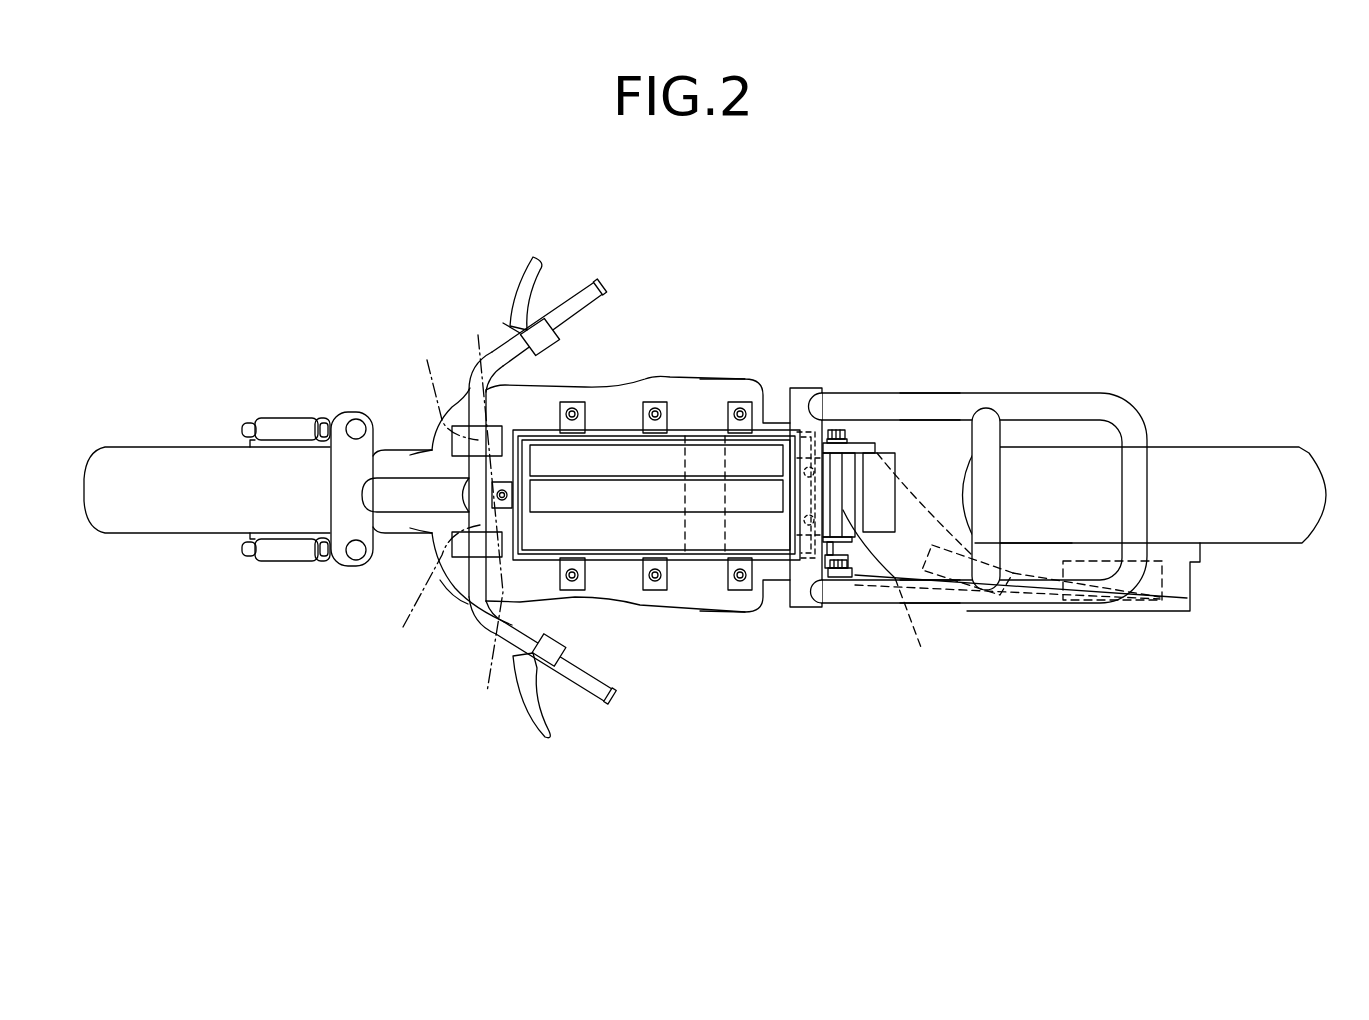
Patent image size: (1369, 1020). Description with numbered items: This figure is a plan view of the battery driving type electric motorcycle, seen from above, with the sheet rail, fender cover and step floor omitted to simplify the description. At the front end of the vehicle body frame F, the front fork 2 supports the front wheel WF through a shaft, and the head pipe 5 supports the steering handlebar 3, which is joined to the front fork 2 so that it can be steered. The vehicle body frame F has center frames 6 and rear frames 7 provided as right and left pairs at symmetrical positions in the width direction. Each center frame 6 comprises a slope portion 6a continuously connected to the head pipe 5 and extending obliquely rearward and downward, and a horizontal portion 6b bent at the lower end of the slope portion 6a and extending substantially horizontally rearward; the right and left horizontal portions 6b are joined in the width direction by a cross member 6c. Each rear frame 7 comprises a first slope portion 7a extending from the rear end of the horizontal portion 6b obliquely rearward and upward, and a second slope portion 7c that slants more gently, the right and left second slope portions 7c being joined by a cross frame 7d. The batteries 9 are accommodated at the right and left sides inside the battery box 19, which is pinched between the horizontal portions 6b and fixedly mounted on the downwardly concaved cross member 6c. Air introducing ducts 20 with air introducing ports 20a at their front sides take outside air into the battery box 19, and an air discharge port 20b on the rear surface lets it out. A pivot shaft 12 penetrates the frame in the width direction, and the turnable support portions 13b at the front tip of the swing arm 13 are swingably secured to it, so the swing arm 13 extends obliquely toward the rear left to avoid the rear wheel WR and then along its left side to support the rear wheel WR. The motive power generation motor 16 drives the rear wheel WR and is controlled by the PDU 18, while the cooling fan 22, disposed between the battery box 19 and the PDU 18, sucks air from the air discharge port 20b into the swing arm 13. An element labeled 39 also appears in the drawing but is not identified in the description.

The front wheel WF is at (160, 462).
The rear wheel WR is at (1262, 465).
The front fork 2 is at (283, 427).
The steering handlebar 3 is at (605, 282).
The head pipe 5 is at (413, 488).
The center frame 6 is at (465, 585).
The slope portion 6a is at (430, 534).
The horizontal portion 6b is at (702, 398).
The cross member 6c is at (707, 560).
The rear frame 7 is at (962, 395).
The first slope portion 7a is at (792, 410).
The second slope portion 7c is at (910, 400).
The cross frame 7d is at (990, 475).
The batteries 9 is at (592, 453).
The pivot shaft 12 is at (876, 535).
The swing arm 13 is at (1155, 620).
The turnable support portions 13b is at (834, 572).
The motive power generation motor 16 is at (1157, 580).
The PDU 18 is at (997, 590).
The battery box 19 is at (625, 557).
The air introducing ducts 20 is at (485, 372).
The air introducing ports 20a is at (427, 360).
The air discharge port 20b is at (832, 430).
The cooling fan 22 is at (910, 578).
The brake lever 39 is at (538, 262).
The vehicle body frame F is at (448, 596).